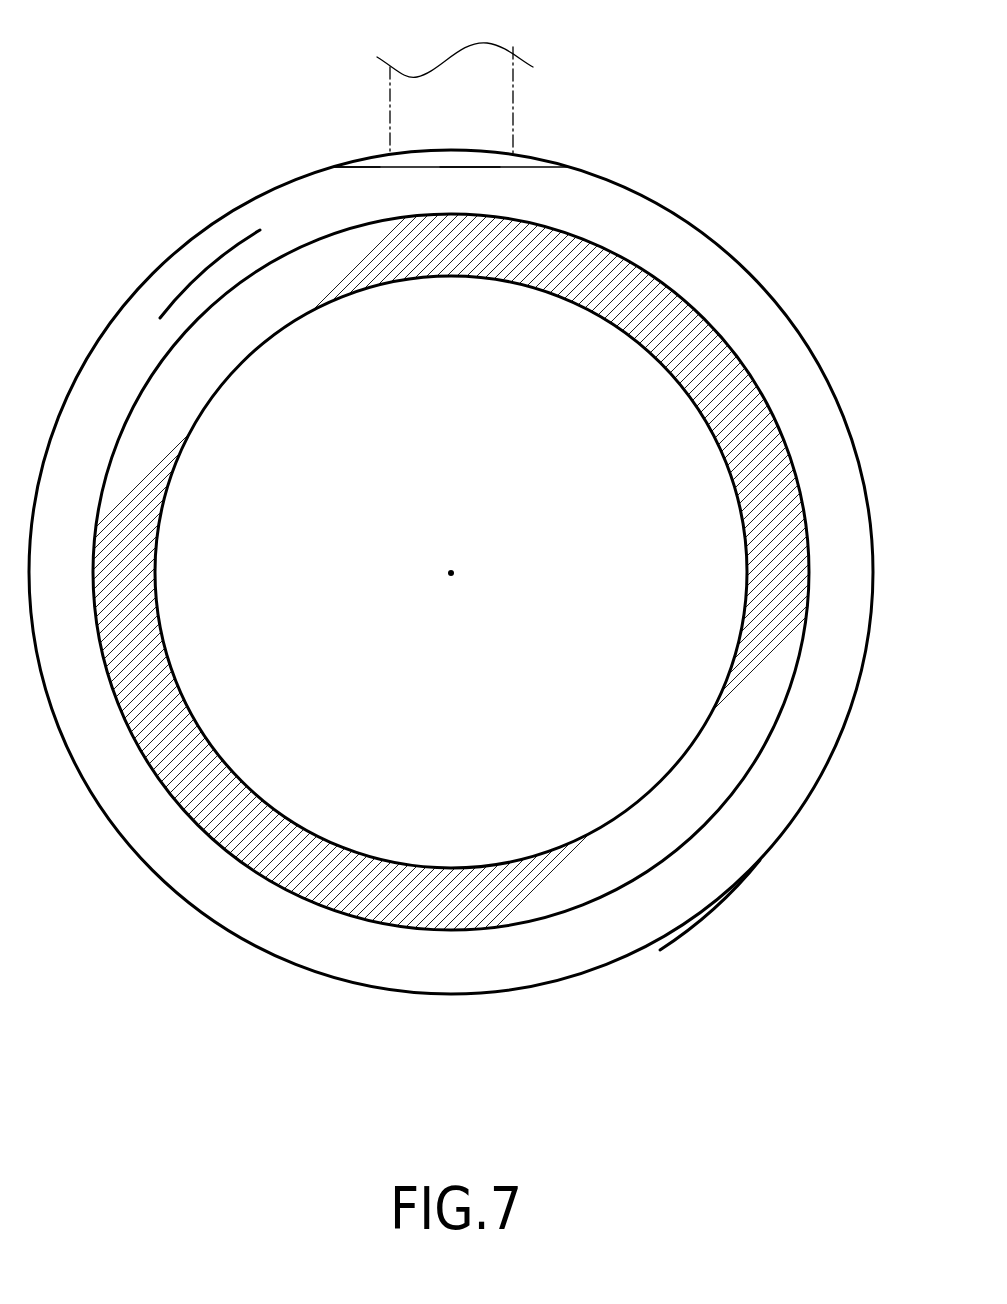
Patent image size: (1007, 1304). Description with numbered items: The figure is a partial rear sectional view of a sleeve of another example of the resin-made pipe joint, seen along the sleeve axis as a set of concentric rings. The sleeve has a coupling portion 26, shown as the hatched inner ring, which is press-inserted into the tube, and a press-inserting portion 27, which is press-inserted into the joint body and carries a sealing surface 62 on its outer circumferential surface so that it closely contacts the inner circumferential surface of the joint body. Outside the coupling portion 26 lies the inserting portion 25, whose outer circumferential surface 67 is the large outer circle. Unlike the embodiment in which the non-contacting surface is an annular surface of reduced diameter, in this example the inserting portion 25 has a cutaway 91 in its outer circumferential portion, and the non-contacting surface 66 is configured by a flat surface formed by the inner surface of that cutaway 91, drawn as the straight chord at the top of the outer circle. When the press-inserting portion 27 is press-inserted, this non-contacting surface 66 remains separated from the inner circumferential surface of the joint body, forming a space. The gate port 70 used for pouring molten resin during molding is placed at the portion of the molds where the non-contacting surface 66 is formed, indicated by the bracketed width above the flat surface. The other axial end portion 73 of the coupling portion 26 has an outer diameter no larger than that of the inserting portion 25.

The inserting portion 25 is at (288, 923).
The coupling portion 26 is at (433, 880).
The press-inserting portion 27 is at (518, 163).
The sealing surface 62 is at (452, 150).
The non-contacting surface 66 is at (377, 167).
The outer circumferential surface of the inserting portion 67 is at (712, 908).
The gate port 70 is at (512, 97).
The another axial end portion of the coupling portion 73 is at (197, 318).
The cutaway 91 is at (477, 163).